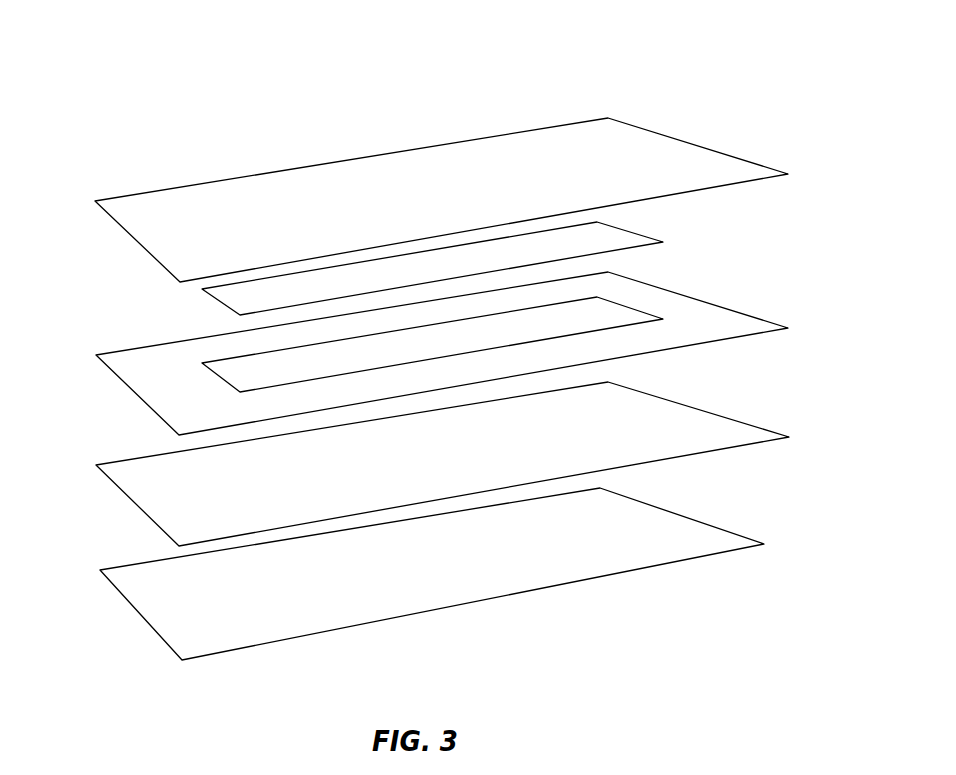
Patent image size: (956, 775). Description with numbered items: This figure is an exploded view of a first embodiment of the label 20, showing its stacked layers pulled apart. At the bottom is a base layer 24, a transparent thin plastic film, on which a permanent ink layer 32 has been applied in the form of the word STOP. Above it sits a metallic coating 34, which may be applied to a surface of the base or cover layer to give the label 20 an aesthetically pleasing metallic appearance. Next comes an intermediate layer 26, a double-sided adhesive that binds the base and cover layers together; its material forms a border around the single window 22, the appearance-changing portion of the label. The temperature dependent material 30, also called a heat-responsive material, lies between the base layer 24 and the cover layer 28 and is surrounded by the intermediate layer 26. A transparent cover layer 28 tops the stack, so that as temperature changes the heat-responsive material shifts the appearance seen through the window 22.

The label 20 is at (226, 86).
The window 22 is at (598, 315).
The base layer 24 is at (678, 543).
The intermediate layer 26 is at (137, 359).
The cover layer 28 is at (142, 208).
The temperature dependent material 30 is at (640, 235).
The permanent ink layer 32 is at (543, 550).
The metallic coating 34 is at (730, 433).